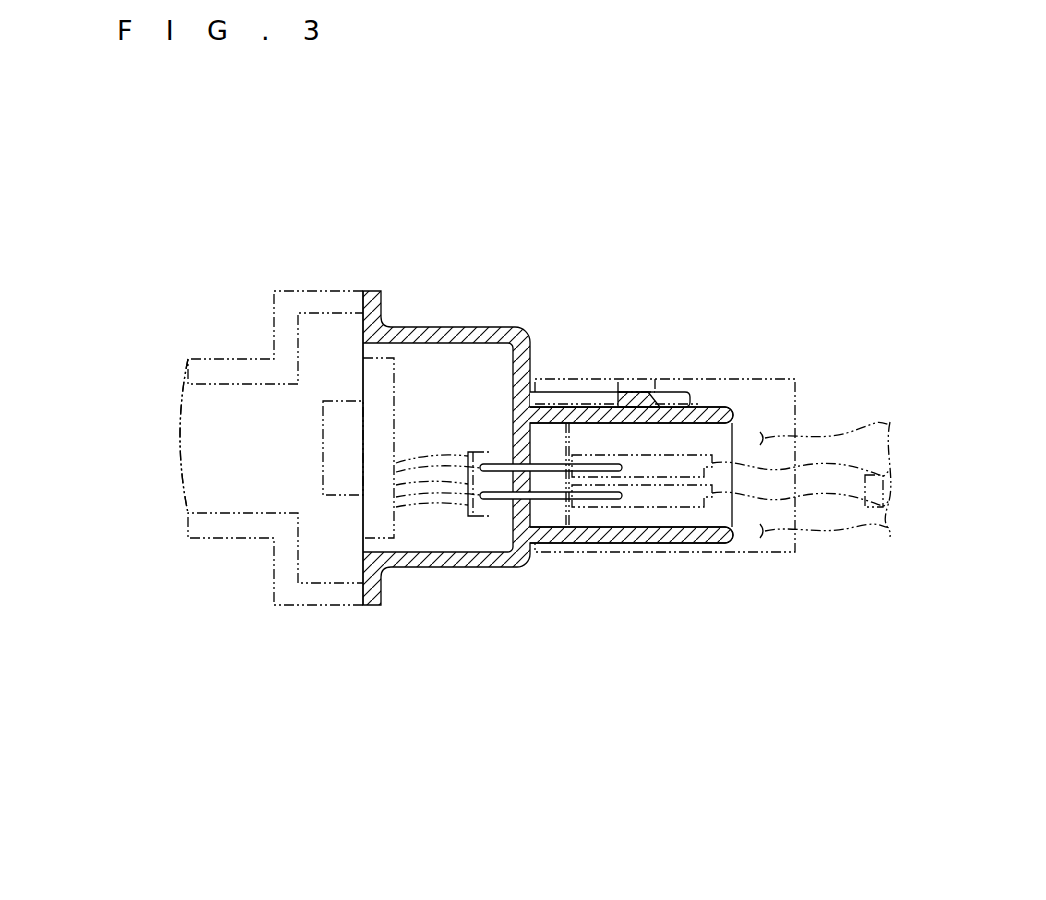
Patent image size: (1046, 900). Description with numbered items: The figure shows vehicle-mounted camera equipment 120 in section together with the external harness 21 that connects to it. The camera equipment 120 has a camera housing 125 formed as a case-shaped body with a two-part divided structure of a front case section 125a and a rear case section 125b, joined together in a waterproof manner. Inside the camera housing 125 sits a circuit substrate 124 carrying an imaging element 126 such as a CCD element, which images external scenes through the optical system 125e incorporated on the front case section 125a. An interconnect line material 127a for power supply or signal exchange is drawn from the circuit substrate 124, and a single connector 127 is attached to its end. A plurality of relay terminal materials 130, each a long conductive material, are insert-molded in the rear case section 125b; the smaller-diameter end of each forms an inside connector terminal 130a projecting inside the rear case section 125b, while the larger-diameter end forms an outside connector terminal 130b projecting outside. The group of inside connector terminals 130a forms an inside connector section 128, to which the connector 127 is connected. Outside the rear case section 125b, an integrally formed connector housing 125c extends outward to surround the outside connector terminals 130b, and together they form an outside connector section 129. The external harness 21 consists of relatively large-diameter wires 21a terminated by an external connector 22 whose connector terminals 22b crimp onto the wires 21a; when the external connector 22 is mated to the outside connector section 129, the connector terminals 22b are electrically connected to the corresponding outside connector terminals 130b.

The vehicle-mounted camera equipment 120 is at (380, 222).
The circuit substrate 124 is at (390, 325).
The camera housing 125 is at (425, 707).
The front case section 125a is at (309, 608).
The rear case section 125b is at (405, 572).
The connector housing 125c is at (588, 532).
The optical system 125e is at (183, 496).
The imaging element 126 is at (342, 400).
The connector 127 is at (490, 516).
The interconnect line material 127a is at (433, 497).
The inside connector section 128 is at (501, 452).
The outside connector section 129 is at (632, 545).
The relay terminal material 130 is at (556, 500).
The inside connector terminal 130a is at (478, 462).
The outside connector terminal 130b is at (612, 490).
The external harness 21 is at (823, 348).
The wires 21a is at (864, 500).
The external connector 22 is at (672, 548).
The connector terminals 22b is at (700, 507).